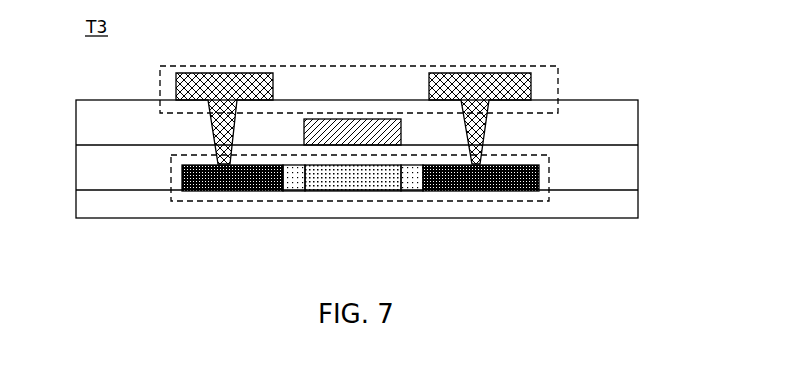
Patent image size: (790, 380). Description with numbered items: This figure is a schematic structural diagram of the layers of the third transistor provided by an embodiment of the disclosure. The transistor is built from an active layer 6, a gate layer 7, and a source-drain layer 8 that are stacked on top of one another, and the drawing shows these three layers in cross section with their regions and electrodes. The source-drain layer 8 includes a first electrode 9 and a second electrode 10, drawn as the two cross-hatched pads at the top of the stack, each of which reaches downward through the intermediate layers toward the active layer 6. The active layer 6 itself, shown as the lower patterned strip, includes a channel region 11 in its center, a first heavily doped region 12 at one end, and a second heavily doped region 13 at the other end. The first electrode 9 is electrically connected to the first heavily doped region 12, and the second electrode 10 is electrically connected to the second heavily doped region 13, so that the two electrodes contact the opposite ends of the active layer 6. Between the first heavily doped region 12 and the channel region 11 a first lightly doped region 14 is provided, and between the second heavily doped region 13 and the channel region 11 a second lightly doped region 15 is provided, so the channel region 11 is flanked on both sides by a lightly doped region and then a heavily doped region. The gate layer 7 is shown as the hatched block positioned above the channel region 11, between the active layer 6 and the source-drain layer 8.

The active layer 6 is at (386, 155).
The gate layer 7 is at (338, 119).
The source-drain layer 8 is at (304, 66).
The first electrode 9 is at (250, 73).
The second electrode 10 is at (441, 73).
The channel region 11 is at (345, 192).
The first heavily doped region 12 is at (193, 187).
The second heavily doped region 13 is at (503, 191).
The first lightly doped region 14 is at (293, 192).
The second lightly doped region 15 is at (415, 192).